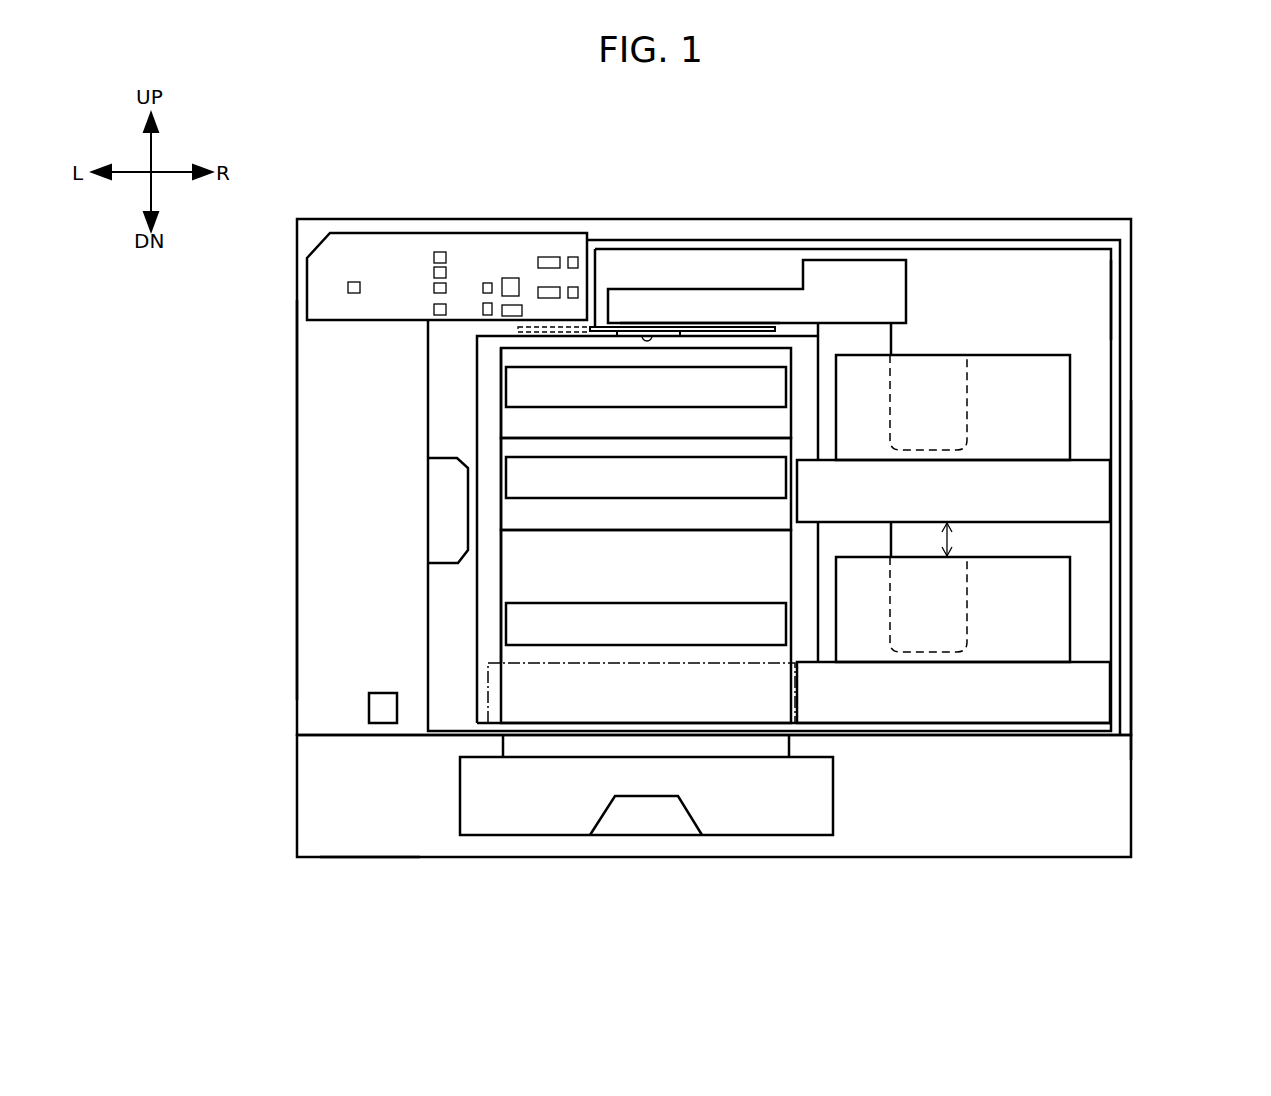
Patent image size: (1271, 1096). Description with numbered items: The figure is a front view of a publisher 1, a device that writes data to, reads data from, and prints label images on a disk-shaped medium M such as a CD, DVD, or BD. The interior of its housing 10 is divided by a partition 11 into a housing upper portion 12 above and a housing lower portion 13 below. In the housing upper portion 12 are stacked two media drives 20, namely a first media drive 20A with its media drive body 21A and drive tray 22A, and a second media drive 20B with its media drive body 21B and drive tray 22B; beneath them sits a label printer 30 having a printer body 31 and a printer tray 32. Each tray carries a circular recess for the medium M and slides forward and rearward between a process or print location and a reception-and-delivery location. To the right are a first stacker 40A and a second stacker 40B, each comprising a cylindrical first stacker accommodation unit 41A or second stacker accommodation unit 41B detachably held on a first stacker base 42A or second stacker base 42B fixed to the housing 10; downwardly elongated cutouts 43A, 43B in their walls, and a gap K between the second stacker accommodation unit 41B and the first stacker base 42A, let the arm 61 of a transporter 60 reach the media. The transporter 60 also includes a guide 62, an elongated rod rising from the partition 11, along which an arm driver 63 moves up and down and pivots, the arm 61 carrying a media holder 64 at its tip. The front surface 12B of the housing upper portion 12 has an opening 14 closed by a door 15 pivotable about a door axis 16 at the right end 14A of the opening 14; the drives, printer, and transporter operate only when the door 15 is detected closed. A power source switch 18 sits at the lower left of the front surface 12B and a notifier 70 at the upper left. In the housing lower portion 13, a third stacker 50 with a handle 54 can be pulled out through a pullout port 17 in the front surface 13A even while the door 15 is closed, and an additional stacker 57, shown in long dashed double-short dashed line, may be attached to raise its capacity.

The publisher 1 is at (756, 156).
The housing 10 is at (730, 219).
The partition 11 is at (1134, 735).
The housing upper portion 12 is at (296, 732).
The front surface 12B is at (322, 598).
The housing lower portion 13 is at (296, 789).
The front surface 13A is at (350, 838).
The opening 14 is at (1073, 254).
The right end 14A is at (1112, 235).
The door 15 is at (487, 448).
The door axis 16 is at (1113, 318).
The pullout port 17 is at (835, 776).
The power source switch 18 is at (369, 710).
The media drives 20 is at (552, 439).
The first media drive 20A is at (496, 353).
The second media drive 20B is at (496, 458).
The media drive body 21A is at (500, 410).
The media drive body 21B is at (500, 522).
The drive tray 22A is at (512, 380).
The drive tray 22B is at (512, 493).
The label printer 30 is at (496, 562).
The printer body 31 is at (515, 590).
The printer tray 32 is at (512, 625).
The first stacker 40A is at (1075, 408).
The second stacker 40B is at (1075, 610).
The first stacker accommodation unit 41A is at (1060, 377).
The second stacker accommodation unit 41B is at (1060, 579).
The first stacker base 42A is at (1090, 490).
The second stacker base 42B is at (1090, 692).
The cutout 43A is at (967, 404).
The cutout 43B is at (967, 594).
The third stacker 50 is at (842, 806).
The handle 54 is at (688, 820).
The additional stacker 57 is at (488, 688).
The transporter 60 is at (846, 256).
The arm 61 is at (682, 303).
The guide 62 is at (891, 345).
The arm driver 63 is at (812, 331).
The media holder 64 is at (636, 340).
The notifier 70 is at (370, 232).
The medium M is at (766, 325).
The gap K is at (957, 539).